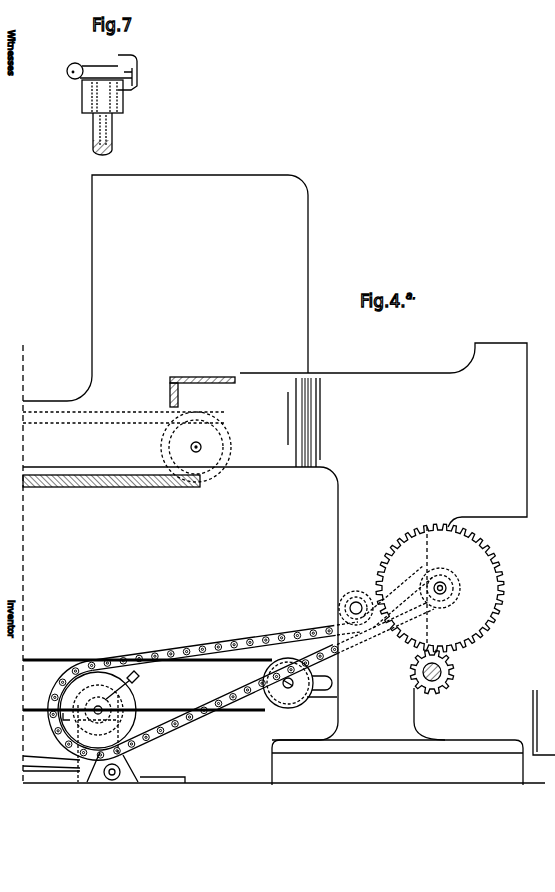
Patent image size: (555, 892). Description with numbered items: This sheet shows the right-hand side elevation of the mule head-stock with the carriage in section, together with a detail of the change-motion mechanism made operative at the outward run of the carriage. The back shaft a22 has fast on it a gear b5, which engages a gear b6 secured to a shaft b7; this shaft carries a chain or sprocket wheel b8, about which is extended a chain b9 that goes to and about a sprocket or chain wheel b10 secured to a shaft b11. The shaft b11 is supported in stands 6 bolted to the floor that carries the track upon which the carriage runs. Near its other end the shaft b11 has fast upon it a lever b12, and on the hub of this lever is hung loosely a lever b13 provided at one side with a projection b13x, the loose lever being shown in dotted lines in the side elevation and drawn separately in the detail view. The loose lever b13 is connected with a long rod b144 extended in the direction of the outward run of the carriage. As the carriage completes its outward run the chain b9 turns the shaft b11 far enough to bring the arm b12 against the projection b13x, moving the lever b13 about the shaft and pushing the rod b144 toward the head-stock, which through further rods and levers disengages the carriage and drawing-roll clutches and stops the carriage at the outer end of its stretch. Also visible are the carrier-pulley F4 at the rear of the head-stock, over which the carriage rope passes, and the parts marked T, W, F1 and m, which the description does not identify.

In FIG. 7, the lever b12 is at (69, 73).
In FIG. 7, the lever b13 is at (82, 97).
In FIG. 4A, the lever b13 is at (128, 758).
In FIG. 7, the projection b13x is at (133, 62).
In FIG. 4A, the projection b13x is at (140, 703).
In FIG. 7, the shaft b11 is at (112, 149).
In FIG. 4A, the shaft b11 is at (110, 705).
In FIG. 4A, the table bracket T is at (202, 382).
In FIG. 4A, the work piece W is at (366, 378).
In FIG. 4A, the feed belt F1 is at (108, 489).
In FIG. 4A, the carrier-pulley F4 is at (200, 486).
In FIG. 4A, the chain b9 is at (272, 641).
In FIG. 4A, the shaft b7 is at (446, 585).
In FIG. 4A, the gear b6 is at (505, 594).
In FIG. 4A, the gear b5 is at (452, 677).
In FIG. 4A, the back shaft a22 is at (434, 682).
In FIG. 4A, the chain or sprocket wheel b8 is at (405, 643).
In FIG. 4A, the sprocket or chain wheel b10 is at (139, 677).
In FIG. 4A, the stands 6 is at (125, 768).
In FIG. 4A, the long rod b144 is at (50, 770).
In FIG. 4A, the support m is at (543, 715).